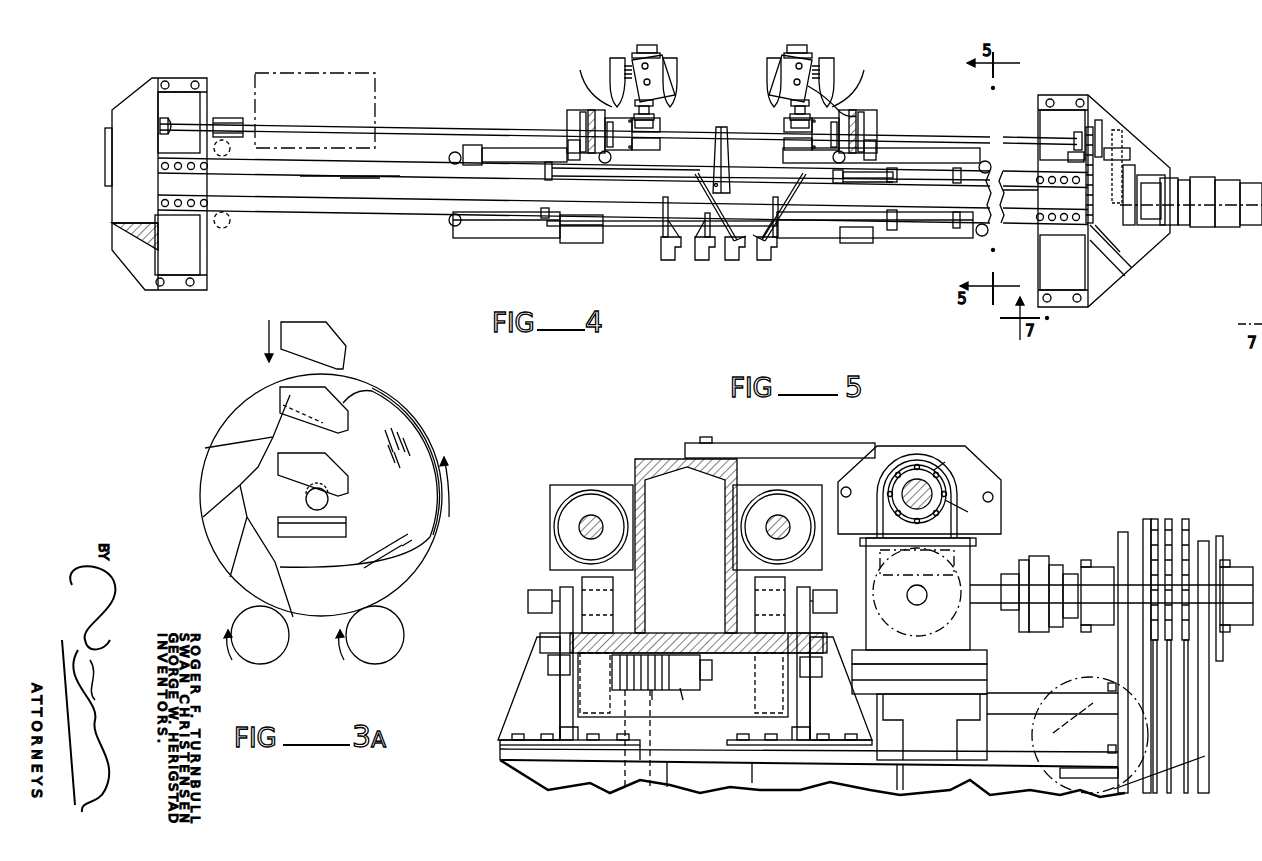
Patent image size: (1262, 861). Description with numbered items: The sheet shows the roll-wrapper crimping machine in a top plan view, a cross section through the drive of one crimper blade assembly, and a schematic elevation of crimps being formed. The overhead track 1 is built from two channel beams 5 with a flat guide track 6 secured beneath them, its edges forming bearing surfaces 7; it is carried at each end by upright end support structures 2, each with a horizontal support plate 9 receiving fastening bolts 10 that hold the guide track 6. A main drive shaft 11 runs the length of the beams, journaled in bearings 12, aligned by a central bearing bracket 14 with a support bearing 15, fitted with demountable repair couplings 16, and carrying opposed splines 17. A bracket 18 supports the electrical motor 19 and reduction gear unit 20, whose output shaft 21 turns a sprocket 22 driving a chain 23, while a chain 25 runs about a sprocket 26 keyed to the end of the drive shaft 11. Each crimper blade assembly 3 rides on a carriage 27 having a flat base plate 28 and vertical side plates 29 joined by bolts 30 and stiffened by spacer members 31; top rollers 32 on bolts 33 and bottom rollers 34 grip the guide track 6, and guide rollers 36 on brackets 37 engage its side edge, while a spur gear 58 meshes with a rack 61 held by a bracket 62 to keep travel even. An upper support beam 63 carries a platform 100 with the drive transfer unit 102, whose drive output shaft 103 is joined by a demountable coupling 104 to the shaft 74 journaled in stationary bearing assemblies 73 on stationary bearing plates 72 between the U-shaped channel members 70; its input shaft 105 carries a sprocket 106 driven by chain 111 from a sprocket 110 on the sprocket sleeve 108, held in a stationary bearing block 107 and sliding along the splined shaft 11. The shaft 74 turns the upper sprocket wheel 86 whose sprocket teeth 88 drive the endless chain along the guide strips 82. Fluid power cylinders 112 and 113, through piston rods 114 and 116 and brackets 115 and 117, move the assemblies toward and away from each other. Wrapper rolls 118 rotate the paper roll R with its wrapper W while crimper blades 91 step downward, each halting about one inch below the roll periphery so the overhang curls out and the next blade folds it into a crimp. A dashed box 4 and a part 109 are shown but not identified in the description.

In FIG. 4, the overhead track 1 is at (365, 215).
In FIG. 5, the overhead track 1 is at (630, 450).
In FIG. 4, the upright end support structures 2 is at (132, 88).
In FIG. 4, the crimper blade assemblies 3 is at (670, 54).
In FIG. 4, the control box 4 is at (315, 71).
In FIG. 4, the channel beams 5 is at (402, 200).
In FIG. 5, the channel beams 5 is at (647, 483).
In FIG. 4, the guide track 6 is at (300, 205).
In FIG. 5, the guide track 6 is at (746, 655).
In FIG. 5, the bearing surfaces 7 is at (600, 627).
In FIG. 4, the horizontal support plate 9 is at (1048, 168).
In FIG. 4, the fastening bolts 10 is at (1020, 199).
In FIG. 4, the main drive shaft 11 is at (416, 122).
In FIG. 5, the main drive shaft 11 is at (932, 482).
In FIG. 4, the bearings 12 is at (168, 125).
In FIG. 4, the central bearing bracket 14 is at (712, 160).
In FIG. 5, the central bearing bracket 14 is at (790, 444).
In FIG. 4, the support bearing 15 is at (722, 125).
In FIG. 4, the demountable repair couplings 16 is at (228, 115).
In FIG. 5, the opposed splines 17 is at (920, 470).
In FIG. 4, the bracket 18 is at (1150, 232).
In FIG. 4, the electrical motor 19 is at (1212, 180).
In FIG. 4, the reduction gear unit 20 is at (1140, 210).
In FIG. 4, the output shaft 21 is at (1105, 200).
In FIG. 4, the sprocket 22 is at (1130, 215).
In FIG. 4, the chain 23 is at (1086, 190).
In FIG. 4, the chain 25 is at (1098, 125).
In FIG. 4, the sprocket 26 is at (1115, 132).
In FIG. 4, the carriage 27 is at (505, 242).
In FIG. 5, the carriage 27 is at (525, 672).
In FIG. 5, the flat base plate 28 is at (500, 750).
In FIG. 5, the vertical side plates 29 is at (565, 737).
In FIG. 5, the bolts 30 is at (517, 737).
In FIG. 5, the spacer members 31 is at (638, 718).
In FIG. 5, the top rollers 32 is at (605, 592).
In FIG. 5, the bolts 33 is at (544, 597).
In FIG. 5, the bottom rollers 34 is at (605, 690).
In FIG. 4, the guide rollers 36 is at (449, 157).
In FIG. 5, the guide rollers 36 is at (548, 640).
In FIG. 5, the brackets 37 is at (548, 663).
In FIG. 5, the spur gear 58 is at (653, 690).
In FIG. 5, the rack 61 is at (681, 689).
In FIG. 5, the bracket 62 is at (690, 680).
In FIG. 4, the upper support beam 63 is at (864, 80).
In FIG. 5, the U-shaped channel members 70 is at (1160, 790).
In FIG. 5, the stationary bearing plates 72 is at (1122, 540).
In FIG. 5, the stationary bearing assemblies 73 is at (1096, 576).
In FIG. 5, the shaft 74 is at (1147, 535).
In FIG. 5, the guide strips 82 is at (1118, 680).
In FIG. 5, the upper sprocket wheel 86 is at (1203, 545).
In FIG. 5, the sprocket teeth 88 is at (1185, 519).
In FIG. 3A, the crimper blades 91 is at (348, 360).
In FIG. 5, the platform 100 is at (985, 692).
In FIG. 4, the drive transfer unit 102 is at (660, 128).
In FIG. 5, the drive transfer unit 102 is at (965, 640).
In FIG. 5, the drive output shaft 103 is at (996, 590).
In FIG. 4, the demountable coupling 104 is at (660, 116).
In FIG. 5, the demountable coupling 104 is at (1040, 633).
In FIG. 5, the input shaft 105 is at (918, 594).
In FIG. 5, the sprocket 106 is at (903, 571).
In FIG. 4, the stationary bearing block 107 is at (582, 110).
In FIG. 5, the stationary bearing block 107 is at (985, 480).
In FIG. 4, the sprocket sleeve 108 is at (596, 152).
In FIG. 5, the sprocket sleeve 108 is at (945, 470).
In FIG. 4, the tube 109 is at (846, 112).
In FIG. 5, the sprocket 110 is at (970, 512).
In FIG. 5, the chain 111 is at (896, 458).
In FIG. 4, the fluid power cylinder 112 is at (802, 228).
In FIG. 4, the fluid power cylinder 113 is at (752, 167).
In FIG. 4, the piston rod 114 is at (566, 244).
In FIG. 4, the bracket 115 is at (546, 220).
In FIG. 4, the piston rod 116 is at (876, 172).
In FIG. 4, the bracket 117 is at (893, 182).
In FIG. 3A, the wrapper rolls 118 is at (368, 658).
In FIG. 3A, the paper roll R is at (412, 425).
In FIG. 3A, the wrapper W is at (360, 390).